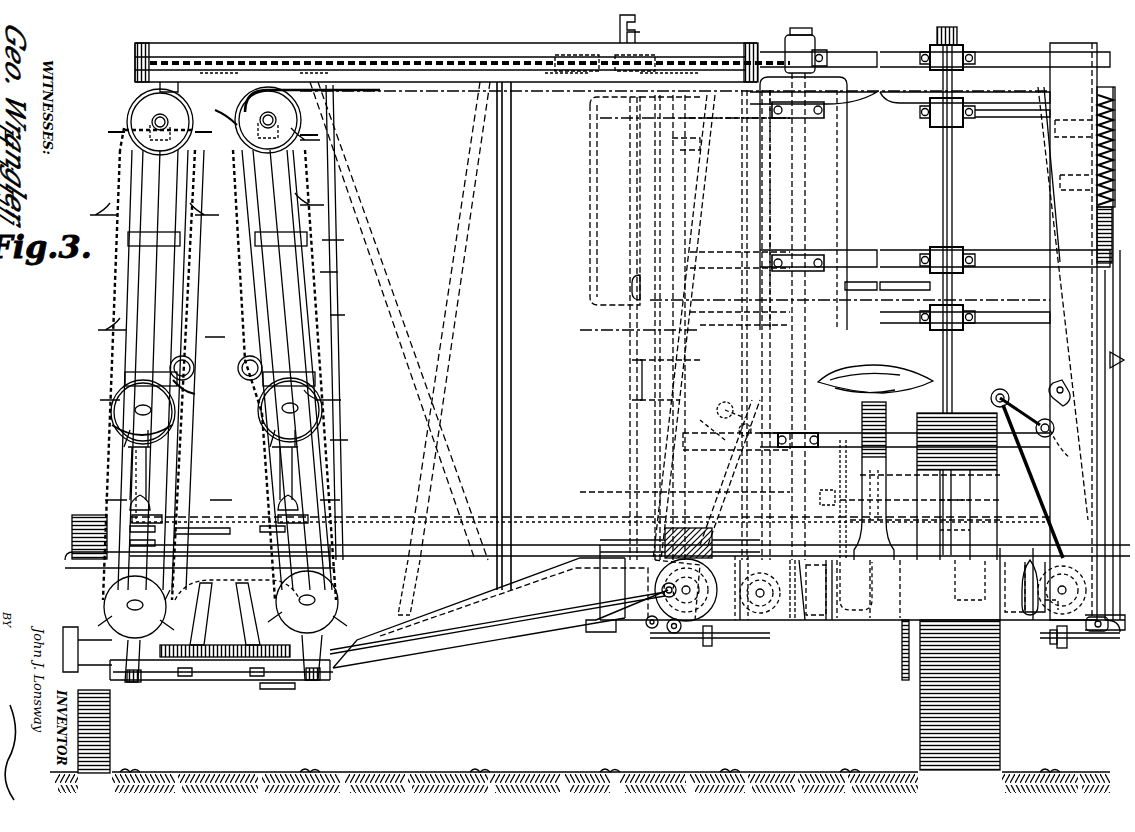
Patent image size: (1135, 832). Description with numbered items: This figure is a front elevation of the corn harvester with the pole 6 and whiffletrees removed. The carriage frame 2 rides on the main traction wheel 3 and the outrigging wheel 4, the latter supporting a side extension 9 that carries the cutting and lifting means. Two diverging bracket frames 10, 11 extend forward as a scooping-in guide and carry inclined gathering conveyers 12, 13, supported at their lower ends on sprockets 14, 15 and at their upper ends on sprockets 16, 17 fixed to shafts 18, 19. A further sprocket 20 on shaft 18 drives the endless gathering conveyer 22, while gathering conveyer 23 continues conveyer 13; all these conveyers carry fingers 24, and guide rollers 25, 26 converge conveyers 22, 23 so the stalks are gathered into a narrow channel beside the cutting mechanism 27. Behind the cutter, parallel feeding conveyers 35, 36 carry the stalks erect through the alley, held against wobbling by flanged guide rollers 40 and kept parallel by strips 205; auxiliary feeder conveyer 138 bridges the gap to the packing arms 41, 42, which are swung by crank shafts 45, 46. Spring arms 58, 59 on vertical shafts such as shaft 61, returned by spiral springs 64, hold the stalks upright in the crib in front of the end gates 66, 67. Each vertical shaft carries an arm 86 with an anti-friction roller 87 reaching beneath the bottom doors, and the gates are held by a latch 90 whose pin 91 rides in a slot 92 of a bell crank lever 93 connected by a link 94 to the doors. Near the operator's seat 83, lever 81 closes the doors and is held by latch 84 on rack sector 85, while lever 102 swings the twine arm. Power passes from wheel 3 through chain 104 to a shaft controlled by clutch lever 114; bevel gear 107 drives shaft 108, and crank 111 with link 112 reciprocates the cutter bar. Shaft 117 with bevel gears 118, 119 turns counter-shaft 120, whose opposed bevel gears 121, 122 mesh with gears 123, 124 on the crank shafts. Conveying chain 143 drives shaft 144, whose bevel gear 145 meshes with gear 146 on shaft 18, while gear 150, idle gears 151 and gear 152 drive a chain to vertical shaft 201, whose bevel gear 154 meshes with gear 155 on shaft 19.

The frame 2 is at (868, 620).
The main traction wheel 3 is at (1000, 710).
The outrigging wheel 4 is at (118, 730).
The pole 6 is at (660, 540).
The extension 9 is at (510, 628).
The bracket frame 10 is at (118, 570).
The bracket frame 11 is at (362, 514).
The gathering conveyer 12 is at (110, 468).
The gathering conveyer 13 is at (340, 572).
The sprocket 14 is at (104, 611).
The sprocket 15 is at (340, 602).
The sprocket 16 is at (114, 414).
The sprocket 17 is at (262, 445).
The shaft 18 is at (150, 470).
The shaft 19 is at (300, 465).
The sprocket 20 is at (160, 414).
The endless gathering conveyer 22 is at (116, 262).
The endless gathering conveyer 23 is at (318, 250).
The fingers 24 is at (985, 235).
The guide roller 25 is at (182, 356).
The guide roller 26 is at (240, 360).
The cutting mechanism 27 is at (312, 398).
The feeding conveyer 35 is at (430, 45).
The feeding conveyer 36 is at (232, 520).
The flanged guide rollers 40 is at (672, 34).
The packing arm 41 is at (820, 410).
The packing arm 42 is at (902, 260).
The crank shaft 45 is at (805, 30).
The crank shaft 46 is at (955, 175).
The spring arm 58 is at (868, 102).
The spring arm 59 is at (897, 102).
The vertical shaft 61 is at (1104, 236).
The spiral springs 64 is at (1097, 165).
The end gate 66 is at (868, 292).
The end gate 67 is at (905, 292).
The lever 81 is at (836, 503).
The operator's seat 83 is at (905, 365).
The latch 84 is at (800, 622).
The stationary rack sector 85 is at (800, 598).
The arm 86 is at (1080, 640).
The anti-friction roller 87 is at (1052, 644).
The latch 90 is at (1122, 372).
The pin 91 is at (1062, 386).
The slot 92 is at (1068, 445).
The bell crank lever 93 is at (738, 415).
The link 94 is at (700, 495).
The lever 102 is at (880, 492).
The chain 104 is at (945, 505).
The bevel gear 107 is at (725, 626).
The longitudinally-extending shaft 108 is at (760, 600).
The crank 111 is at (645, 632).
The link 112 is at (470, 628).
The lever 114 is at (955, 520).
The shaft 117 is at (1074, 582).
The bevel gear 118 is at (1064, 580).
The bevel gear 119 is at (1036, 560).
The counter-shaft 120 is at (1012, 615).
The bevel gear 121 is at (857, 580).
The bevel gear 122 is at (902, 640).
The bevel gear 123 is at (829, 622).
The bevel gear 124 is at (980, 560).
The auxiliary feeder conveyer 138 is at (712, 472).
The chain-and-sprocket connection 143 is at (215, 533).
The shaft 144 is at (175, 598).
The bevel gear 145 is at (170, 520).
The bevel gear 146 is at (168, 490).
The gear 150 is at (190, 660).
The idle gears 151 is at (235, 658).
The gear 152 is at (272, 682).
The bevel gear 154 is at (305, 520).
The bevel gear 155 is at (300, 495).
The vertical shaft 201 is at (250, 610).
The strips 205 is at (712, 46).